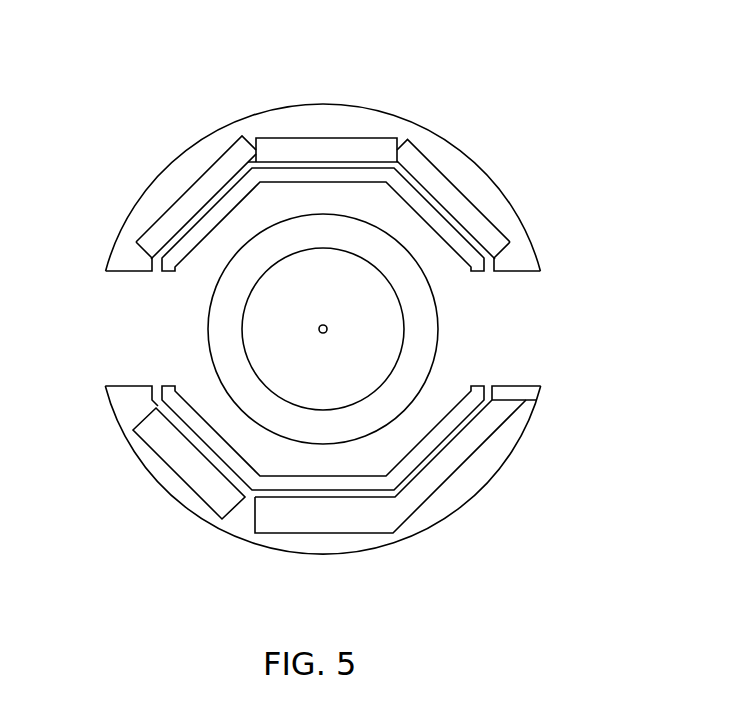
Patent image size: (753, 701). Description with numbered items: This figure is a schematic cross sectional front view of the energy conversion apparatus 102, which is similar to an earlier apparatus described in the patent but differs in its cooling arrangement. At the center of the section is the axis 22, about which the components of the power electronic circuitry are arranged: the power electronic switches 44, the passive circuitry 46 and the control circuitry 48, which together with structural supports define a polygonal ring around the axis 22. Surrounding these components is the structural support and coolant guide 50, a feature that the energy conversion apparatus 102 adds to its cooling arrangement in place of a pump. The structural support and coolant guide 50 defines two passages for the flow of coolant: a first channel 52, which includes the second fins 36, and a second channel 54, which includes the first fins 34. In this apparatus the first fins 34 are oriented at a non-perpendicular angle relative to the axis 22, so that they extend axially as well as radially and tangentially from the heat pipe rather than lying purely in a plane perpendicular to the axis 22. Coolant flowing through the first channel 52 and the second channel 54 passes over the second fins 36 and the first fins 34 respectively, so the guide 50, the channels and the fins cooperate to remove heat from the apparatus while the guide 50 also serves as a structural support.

The energy conversion apparatus 102 is at (603, 64).
The structural support and coolant guide 50 is at (98, 326).
The first fins 34 is at (372, 313).
The second channel 54 is at (415, 357).
The axis 22 is at (321, 324).
The second fins 36 is at (357, 161).
The power electronic switches 44 is at (321, 147).
The first channel 52 is at (180, 247).
The control circuitry 48 is at (173, 475).
The passive circuitry 46 is at (500, 468).